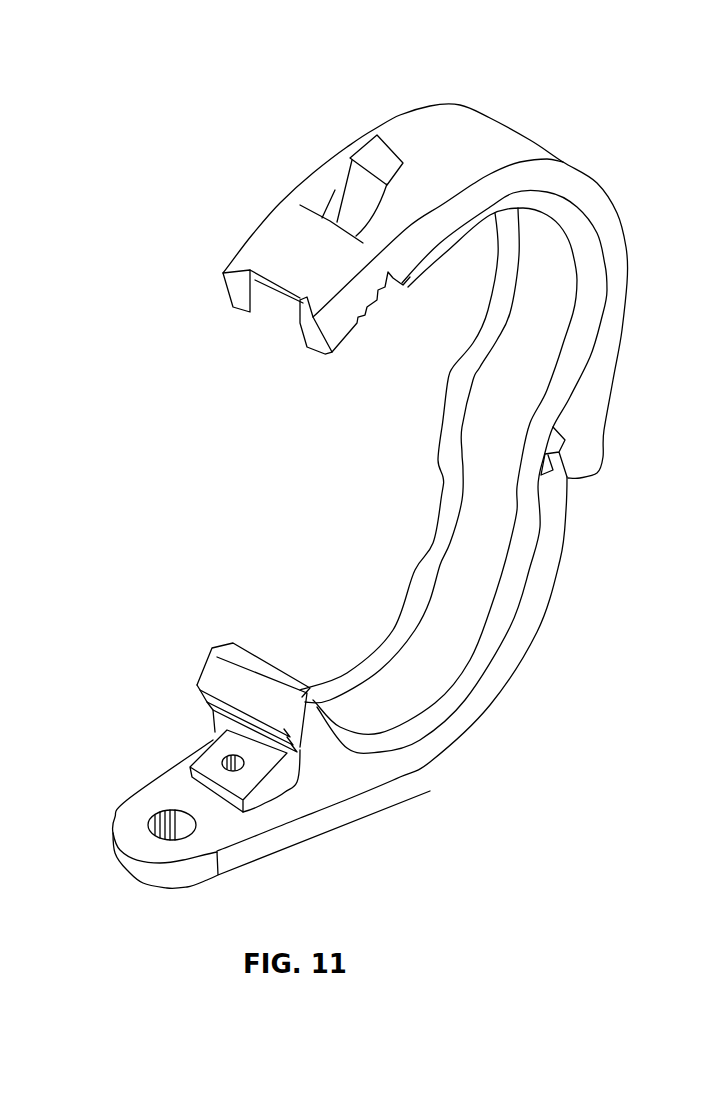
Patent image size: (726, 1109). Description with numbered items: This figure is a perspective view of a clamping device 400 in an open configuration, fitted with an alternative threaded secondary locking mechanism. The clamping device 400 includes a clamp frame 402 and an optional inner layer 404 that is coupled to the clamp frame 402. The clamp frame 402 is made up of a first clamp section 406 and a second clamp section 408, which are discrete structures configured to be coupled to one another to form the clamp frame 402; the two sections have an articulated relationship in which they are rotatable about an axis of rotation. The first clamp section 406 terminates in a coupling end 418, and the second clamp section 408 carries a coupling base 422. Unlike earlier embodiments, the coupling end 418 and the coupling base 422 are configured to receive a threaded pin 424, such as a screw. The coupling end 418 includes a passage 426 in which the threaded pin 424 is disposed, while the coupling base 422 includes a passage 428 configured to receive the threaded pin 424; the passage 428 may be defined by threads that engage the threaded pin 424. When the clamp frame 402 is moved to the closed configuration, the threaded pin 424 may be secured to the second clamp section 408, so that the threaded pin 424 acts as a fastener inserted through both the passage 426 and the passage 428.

The clamping device 400 is at (196, 106).
The clamp frame 402 is at (645, 240).
The inner layer 404 is at (393, 630).
The first clamp section 406 is at (500, 146).
The second clamp section 408 is at (537, 632).
The coupling end 418 is at (243, 223).
The coupling base 422 is at (190, 728).
The threaded pin 424 is at (375, 157).
The passage 426 is at (287, 300).
The passage 428 is at (238, 755).